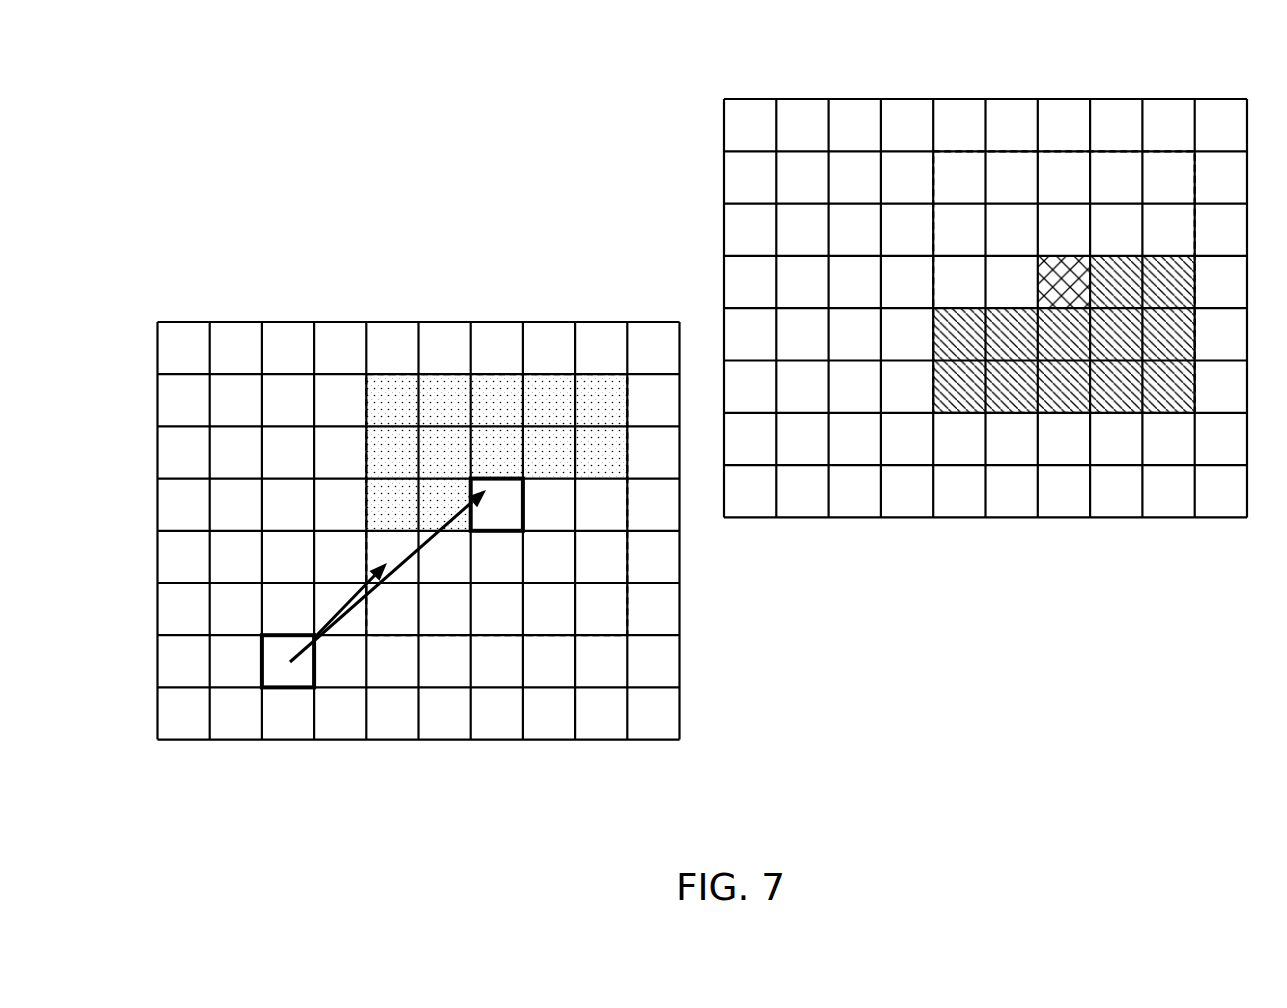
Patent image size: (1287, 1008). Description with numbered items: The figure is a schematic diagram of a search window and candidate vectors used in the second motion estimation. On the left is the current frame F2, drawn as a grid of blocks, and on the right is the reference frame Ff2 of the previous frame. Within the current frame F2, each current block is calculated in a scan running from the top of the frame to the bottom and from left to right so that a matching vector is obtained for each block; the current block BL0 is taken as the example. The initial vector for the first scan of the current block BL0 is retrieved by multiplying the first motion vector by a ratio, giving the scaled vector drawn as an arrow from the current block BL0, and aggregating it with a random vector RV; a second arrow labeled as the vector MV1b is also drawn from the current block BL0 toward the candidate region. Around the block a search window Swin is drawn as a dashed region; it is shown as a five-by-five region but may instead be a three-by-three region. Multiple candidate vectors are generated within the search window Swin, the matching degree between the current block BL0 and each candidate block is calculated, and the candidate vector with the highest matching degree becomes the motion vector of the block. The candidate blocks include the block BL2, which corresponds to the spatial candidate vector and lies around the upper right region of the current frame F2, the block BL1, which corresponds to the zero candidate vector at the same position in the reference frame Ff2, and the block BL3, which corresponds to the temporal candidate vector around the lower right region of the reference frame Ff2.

The current frame F2 is at (600, 322).
The block BL2 is at (500, 402).
The search window Swin is at (540, 640).
The random vector RV is at (432, 533).
The current block BL0 is at (288, 688).
The motion vector MV1b is at (413, 545).
The block BL3 is at (958, 320).
The block BL1 is at (1067, 270).
The reference frame Ff2 is at (1167, 99).